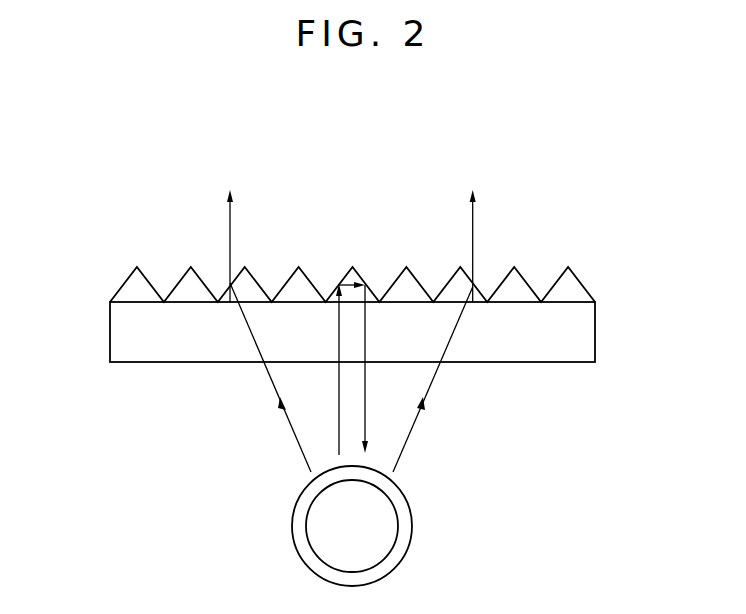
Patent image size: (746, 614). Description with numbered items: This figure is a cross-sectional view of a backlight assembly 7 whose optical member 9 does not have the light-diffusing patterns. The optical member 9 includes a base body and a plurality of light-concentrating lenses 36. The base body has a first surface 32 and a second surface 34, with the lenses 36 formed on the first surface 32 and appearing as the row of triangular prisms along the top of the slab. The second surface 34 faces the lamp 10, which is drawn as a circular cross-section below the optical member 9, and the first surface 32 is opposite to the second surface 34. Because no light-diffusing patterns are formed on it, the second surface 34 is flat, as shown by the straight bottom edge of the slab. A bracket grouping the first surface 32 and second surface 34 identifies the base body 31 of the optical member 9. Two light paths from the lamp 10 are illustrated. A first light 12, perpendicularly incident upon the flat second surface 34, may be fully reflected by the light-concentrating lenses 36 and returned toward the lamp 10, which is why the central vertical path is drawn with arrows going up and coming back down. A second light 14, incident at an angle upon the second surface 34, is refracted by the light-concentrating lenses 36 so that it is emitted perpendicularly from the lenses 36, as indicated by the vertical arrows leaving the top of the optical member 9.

The backlight assembly 7 is at (331, 146).
The optical member 9 is at (104, 318).
The lamp 10 is at (292, 526).
The first light 12 is at (339, 387).
The second light 14 is at (410, 433).
The optical sheet 31 is at (672, 275).
The first surface 32 is at (572, 302).
The second surface 34 is at (572, 362).
The light-concentrating lenses 36 is at (315, 286).